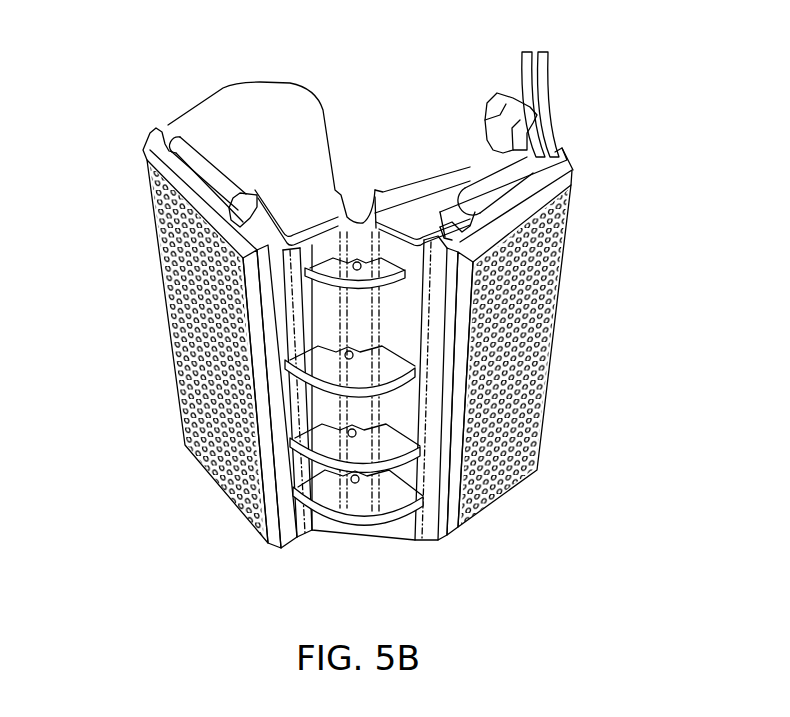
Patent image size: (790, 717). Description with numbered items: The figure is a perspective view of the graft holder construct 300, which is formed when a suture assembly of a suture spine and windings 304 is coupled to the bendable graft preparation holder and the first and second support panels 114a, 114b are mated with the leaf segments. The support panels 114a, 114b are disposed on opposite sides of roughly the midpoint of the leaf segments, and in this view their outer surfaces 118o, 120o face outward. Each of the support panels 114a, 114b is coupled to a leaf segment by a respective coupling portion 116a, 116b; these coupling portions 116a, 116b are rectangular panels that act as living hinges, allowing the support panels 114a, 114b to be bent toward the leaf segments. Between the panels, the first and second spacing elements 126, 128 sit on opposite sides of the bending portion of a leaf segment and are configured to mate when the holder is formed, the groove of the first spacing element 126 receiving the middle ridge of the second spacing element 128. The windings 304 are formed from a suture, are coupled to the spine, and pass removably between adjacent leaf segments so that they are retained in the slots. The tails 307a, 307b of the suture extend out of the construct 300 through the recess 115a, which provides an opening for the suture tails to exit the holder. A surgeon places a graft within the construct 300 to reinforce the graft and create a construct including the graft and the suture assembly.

The graft holder construct 300 is at (124, 93).
The first support panel 114a is at (571, 238).
The second support panel 114b is at (145, 162).
The recess 115a is at (565, 153).
The first coupling portion 116a is at (500, 177).
The second coupling portion 116b is at (208, 167).
The outer surface of first support panel 118o is at (545, 335).
The outer surface of second support panel 120o is at (201, 373).
The first spacing element 126 is at (428, 190).
The second spacing element 128 is at (290, 105).
The windings 304 is at (357, 537).
The first suture tail 307a is at (552, 66).
The second suture tail 307b is at (526, 76).